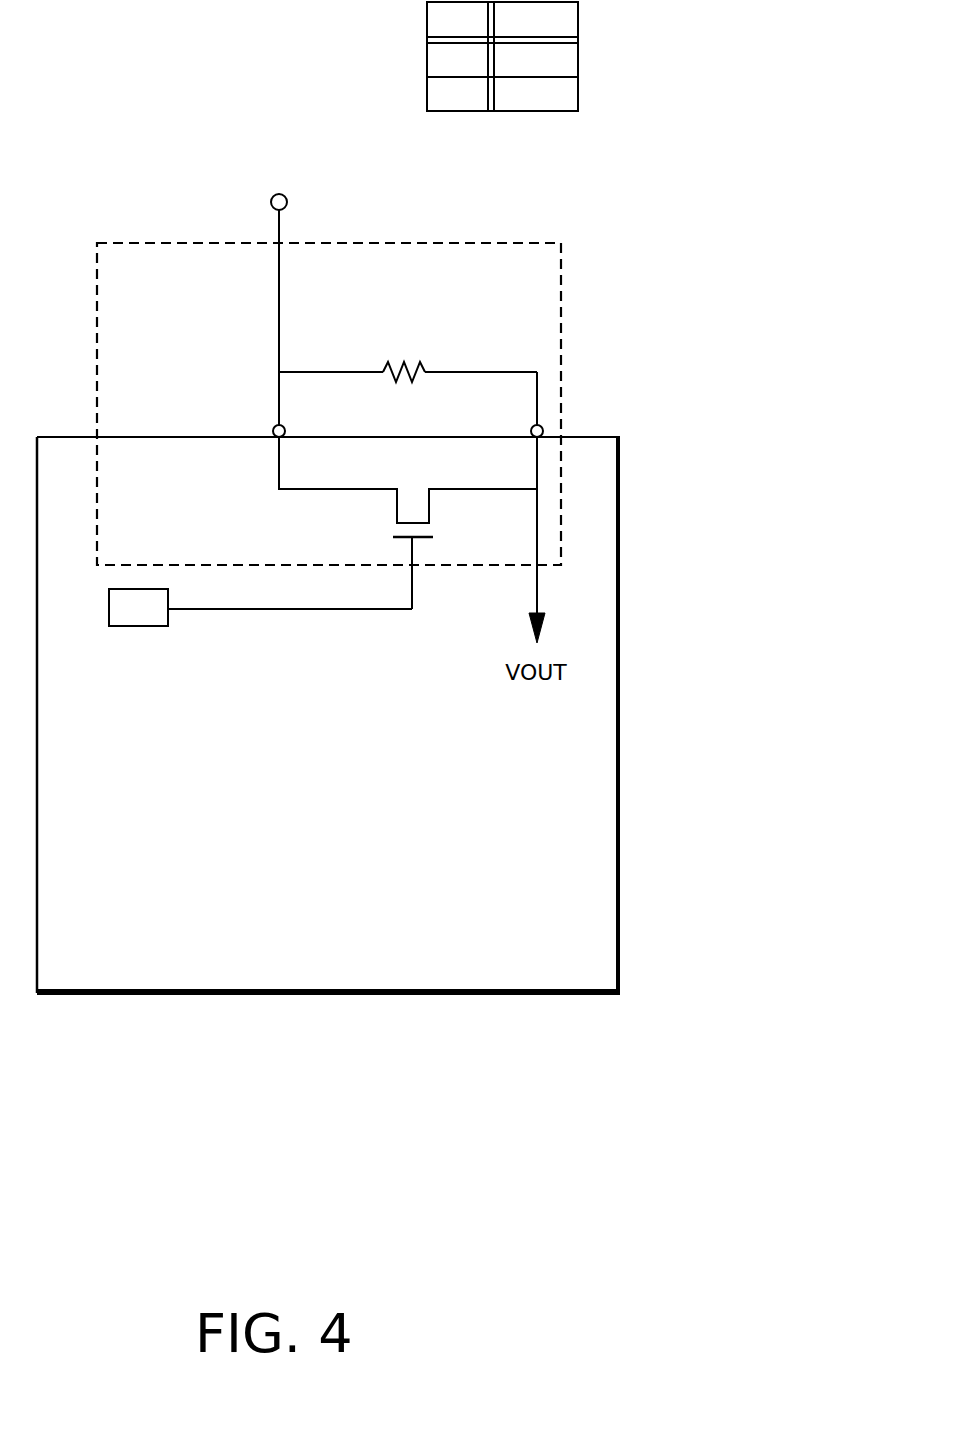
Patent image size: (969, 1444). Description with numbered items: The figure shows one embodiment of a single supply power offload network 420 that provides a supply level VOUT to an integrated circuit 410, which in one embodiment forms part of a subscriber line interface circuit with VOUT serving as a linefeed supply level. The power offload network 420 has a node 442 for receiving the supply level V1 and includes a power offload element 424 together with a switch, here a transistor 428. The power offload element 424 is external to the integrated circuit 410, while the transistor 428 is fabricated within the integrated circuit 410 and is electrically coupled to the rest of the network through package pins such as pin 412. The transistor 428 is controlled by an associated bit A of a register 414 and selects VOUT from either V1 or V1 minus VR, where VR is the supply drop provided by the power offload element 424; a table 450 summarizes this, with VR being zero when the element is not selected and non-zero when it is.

The integrated circuit 410 is at (595, 436).
The pin 412 is at (270, 427).
The register 414 is at (143, 628).
The single supply power offload network 420 is at (565, 308).
The power offload element 424 is at (418, 360).
The transistor 428 is at (438, 532).
The node 442 is at (300, 206).
The truth table 450 is at (590, 50).